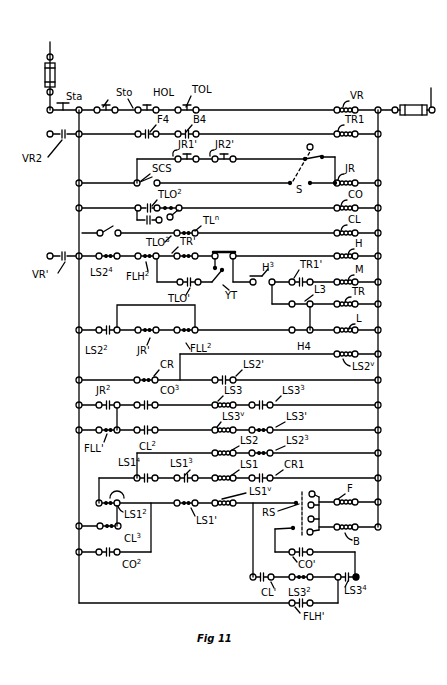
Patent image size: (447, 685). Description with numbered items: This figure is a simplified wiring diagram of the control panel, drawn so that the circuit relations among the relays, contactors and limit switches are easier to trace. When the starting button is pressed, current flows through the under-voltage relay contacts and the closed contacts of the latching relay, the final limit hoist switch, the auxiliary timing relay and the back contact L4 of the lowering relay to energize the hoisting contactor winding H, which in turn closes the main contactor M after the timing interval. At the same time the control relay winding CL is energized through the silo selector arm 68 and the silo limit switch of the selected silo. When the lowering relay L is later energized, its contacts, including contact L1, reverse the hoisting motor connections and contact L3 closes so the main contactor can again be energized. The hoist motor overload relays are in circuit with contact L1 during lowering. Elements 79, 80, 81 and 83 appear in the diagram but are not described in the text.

The silo selector arm 68 is at (110, 225).
The switch 83 is at (165, 214).
The reversing switch RS mechanism 79 is at (300, 507).
The switch contacts 80 is at (323, 512).
The switch contacts 81 is at (315, 493).
The lowering contact L1 is at (56, 35).
The lowering relay contact L3 is at (408, 95).
The lowering relay back contact L4 is at (232, 252).